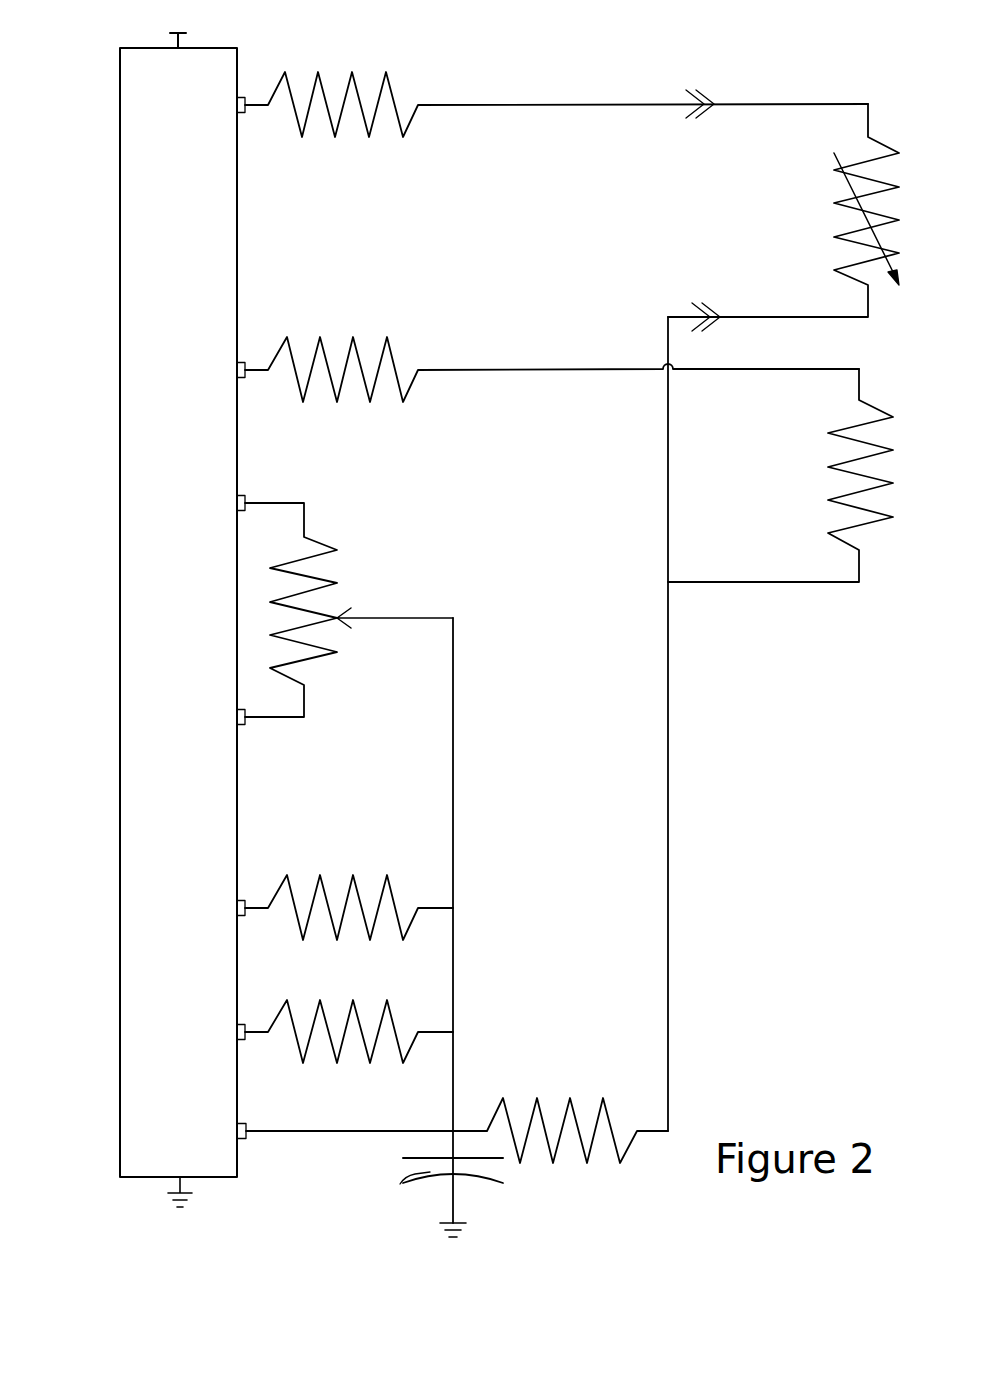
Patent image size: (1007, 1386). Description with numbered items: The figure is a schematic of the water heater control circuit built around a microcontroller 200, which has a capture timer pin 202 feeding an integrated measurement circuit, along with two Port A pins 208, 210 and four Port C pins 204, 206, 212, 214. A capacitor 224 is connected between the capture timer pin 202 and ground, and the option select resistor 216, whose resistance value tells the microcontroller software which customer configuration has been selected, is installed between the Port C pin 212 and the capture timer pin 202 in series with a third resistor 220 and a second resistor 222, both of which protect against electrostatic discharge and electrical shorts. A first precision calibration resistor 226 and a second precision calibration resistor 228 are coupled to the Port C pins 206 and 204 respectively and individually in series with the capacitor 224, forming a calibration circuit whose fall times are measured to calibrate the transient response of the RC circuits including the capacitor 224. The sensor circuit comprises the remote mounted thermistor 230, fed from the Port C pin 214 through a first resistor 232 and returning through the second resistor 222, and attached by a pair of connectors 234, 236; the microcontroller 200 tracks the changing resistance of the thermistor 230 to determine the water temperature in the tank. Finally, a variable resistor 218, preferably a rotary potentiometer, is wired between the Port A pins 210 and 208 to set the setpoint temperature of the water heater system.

The microcontroller 200 is at (119, 906).
The capture timer (TCAP) pin 202 is at (246, 1140).
The pin PC2 204 is at (246, 1042).
The pin PC0 206 is at (241, 917).
The pin PA0 208 is at (241, 726).
The pin PA2 210 is at (245, 497).
The pin PC5 212 is at (241, 380).
The pin PC7 214 is at (241, 115).
The option select resistor 216 is at (830, 466).
The variable resistor 218 is at (337, 550).
The resistor R3 220 is at (370, 404).
The resistor R2 222 is at (589, 1165).
The capacitor 224 is at (403, 1158).
The precision resistor RCal1 226 is at (390, 877).
The precision resistor RCal2 228 is at (390, 1002).
The thermistor 230 is at (887, 140).
The resistor R1 232 is at (370, 139).
The connector 234 is at (700, 94).
The connector 236 is at (710, 305).